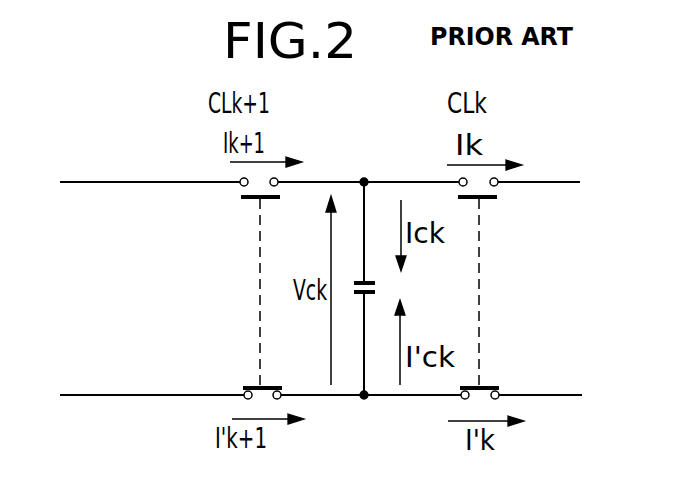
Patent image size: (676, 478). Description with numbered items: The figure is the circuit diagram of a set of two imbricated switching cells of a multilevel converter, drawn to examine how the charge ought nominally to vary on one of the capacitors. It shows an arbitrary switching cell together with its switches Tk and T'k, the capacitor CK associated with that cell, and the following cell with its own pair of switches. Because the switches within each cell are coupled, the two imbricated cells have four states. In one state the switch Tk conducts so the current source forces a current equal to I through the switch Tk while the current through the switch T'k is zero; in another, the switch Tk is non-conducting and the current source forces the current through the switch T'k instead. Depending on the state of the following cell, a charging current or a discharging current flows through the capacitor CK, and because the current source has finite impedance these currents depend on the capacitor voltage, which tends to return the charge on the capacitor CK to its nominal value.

The switch Tk is at (493, 199).
The switch T'k is at (500, 370).
The capacitor CK is at (377, 289).